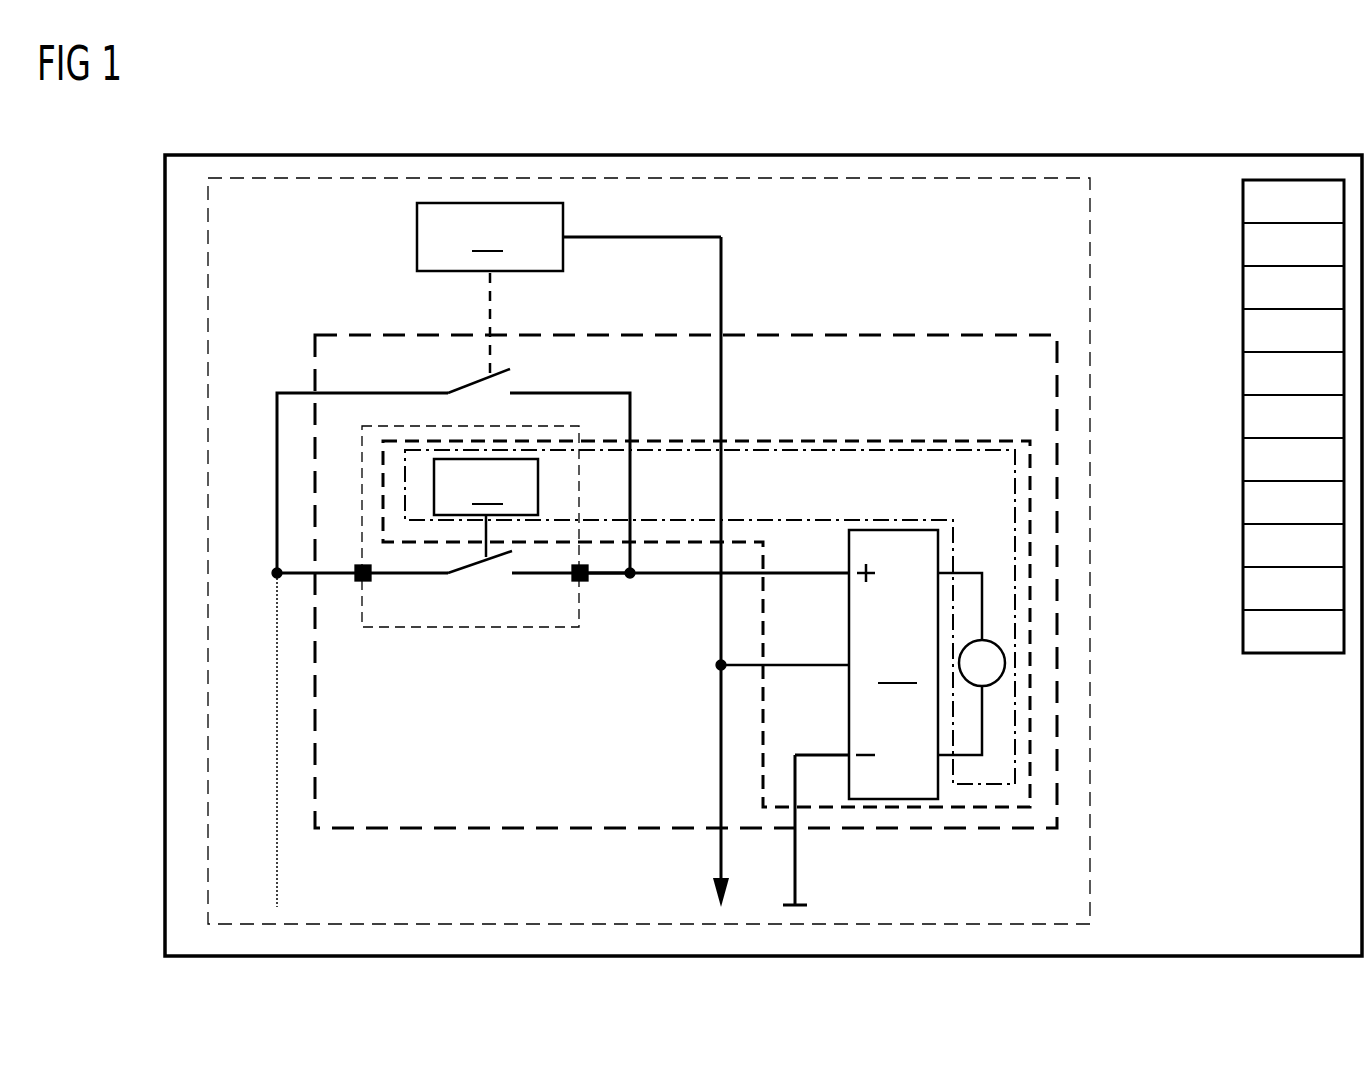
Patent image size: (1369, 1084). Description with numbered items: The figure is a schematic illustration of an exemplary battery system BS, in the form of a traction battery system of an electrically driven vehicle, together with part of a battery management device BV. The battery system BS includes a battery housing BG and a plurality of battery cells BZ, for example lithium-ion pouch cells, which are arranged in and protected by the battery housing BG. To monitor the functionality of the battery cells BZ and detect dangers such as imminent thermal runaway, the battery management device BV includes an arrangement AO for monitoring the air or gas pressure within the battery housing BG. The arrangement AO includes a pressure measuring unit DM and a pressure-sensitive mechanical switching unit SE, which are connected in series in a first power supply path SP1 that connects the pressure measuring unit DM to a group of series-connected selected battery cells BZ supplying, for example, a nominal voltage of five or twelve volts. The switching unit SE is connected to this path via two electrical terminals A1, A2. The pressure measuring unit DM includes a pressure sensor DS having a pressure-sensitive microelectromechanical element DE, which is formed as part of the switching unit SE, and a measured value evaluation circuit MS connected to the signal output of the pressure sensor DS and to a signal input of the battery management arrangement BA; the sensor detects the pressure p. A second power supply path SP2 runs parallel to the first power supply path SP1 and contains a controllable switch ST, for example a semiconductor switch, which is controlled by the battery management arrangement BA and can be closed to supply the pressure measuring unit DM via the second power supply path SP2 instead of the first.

The battery system BS is at (352, 128).
The battery housing BG is at (885, 155).
The battery management device BV is at (780, 178).
The battery cells BZ is at (1262, 201).
The battery management arrangement BA is at (569, 288).
The arrangement AO is at (975, 335).
The second power supply path SP2 is at (360, 393).
The controllable switch ST is at (479, 371).
The pressure-sensitive mechanical switching unit SE is at (470, 630).
The pressure sensor DS is at (845, 440).
The pressure measuring unit DM is at (928, 450).
The microelectromechanical element DE is at (486, 508).
The electrical terminal A1 is at (377, 590).
The electrical terminal A2 is at (563, 590).
The first power supply path SP1 is at (606, 580).
The measured value evaluation circuit MS is at (893, 664).
The pressure sensor p is at (971, 664).